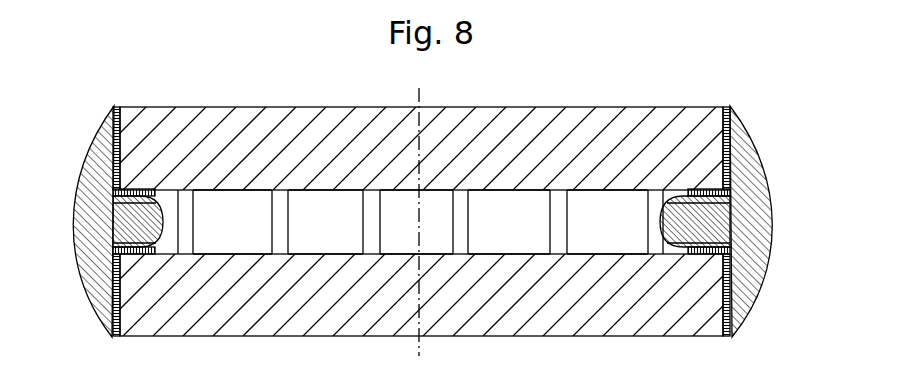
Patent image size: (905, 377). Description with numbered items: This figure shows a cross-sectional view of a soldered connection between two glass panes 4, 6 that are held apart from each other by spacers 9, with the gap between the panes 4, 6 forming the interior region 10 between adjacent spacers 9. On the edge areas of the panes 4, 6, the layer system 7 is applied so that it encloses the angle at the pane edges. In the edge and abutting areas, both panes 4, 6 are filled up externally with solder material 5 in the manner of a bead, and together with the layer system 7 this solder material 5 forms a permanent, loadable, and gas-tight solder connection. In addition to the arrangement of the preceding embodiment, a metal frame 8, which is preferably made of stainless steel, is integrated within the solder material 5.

The glass pane 4 is at (703, 163).
The solder material 5 is at (86, 222).
The glass pane 6 is at (703, 308).
The layer system 7 is at (116, 142).
The metal frame 8 is at (102, 206).
The spacer 9 is at (284, 208).
The channel 10 is at (532, 210).